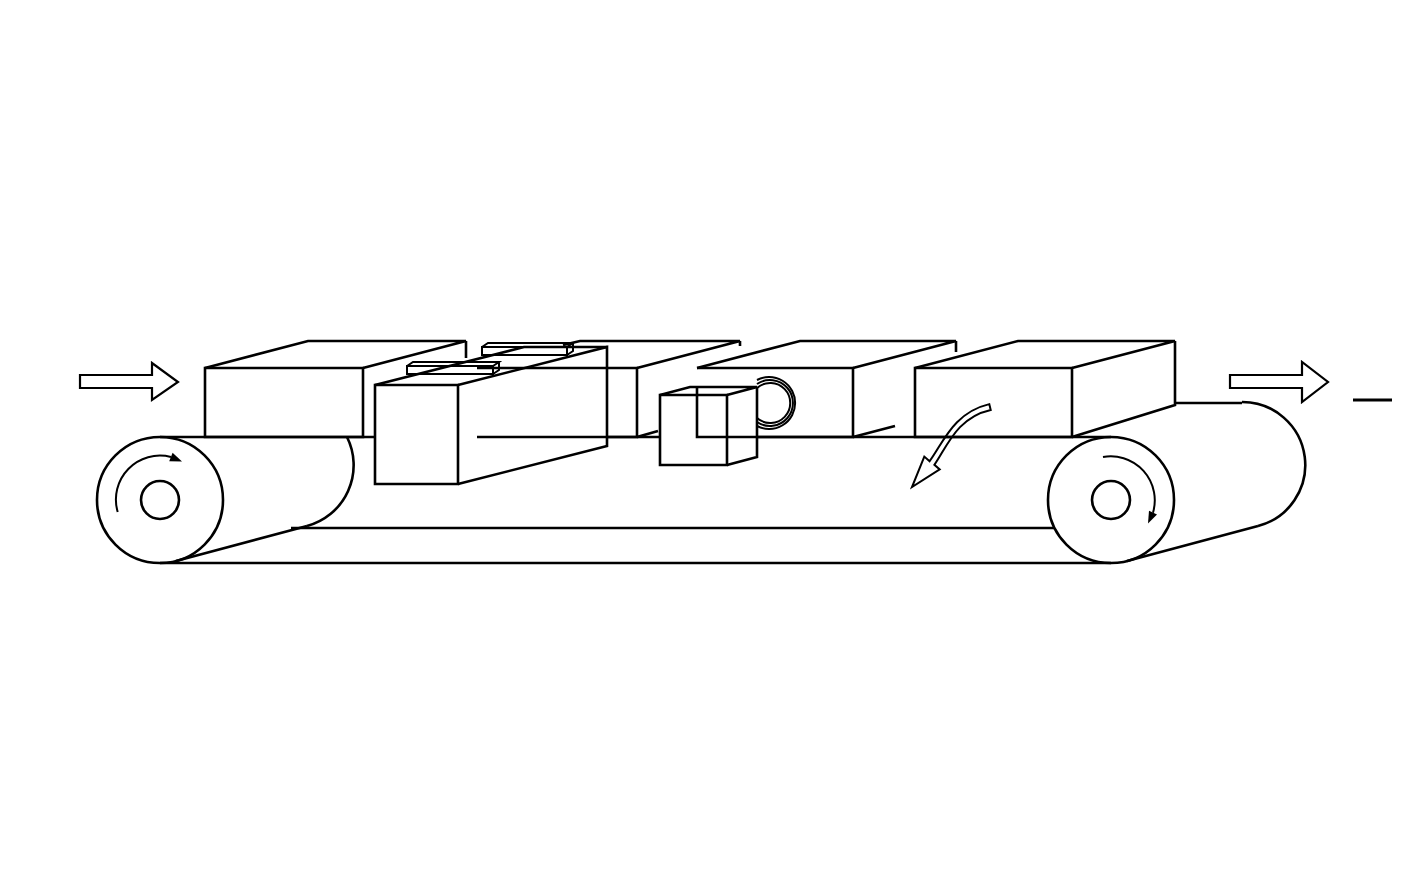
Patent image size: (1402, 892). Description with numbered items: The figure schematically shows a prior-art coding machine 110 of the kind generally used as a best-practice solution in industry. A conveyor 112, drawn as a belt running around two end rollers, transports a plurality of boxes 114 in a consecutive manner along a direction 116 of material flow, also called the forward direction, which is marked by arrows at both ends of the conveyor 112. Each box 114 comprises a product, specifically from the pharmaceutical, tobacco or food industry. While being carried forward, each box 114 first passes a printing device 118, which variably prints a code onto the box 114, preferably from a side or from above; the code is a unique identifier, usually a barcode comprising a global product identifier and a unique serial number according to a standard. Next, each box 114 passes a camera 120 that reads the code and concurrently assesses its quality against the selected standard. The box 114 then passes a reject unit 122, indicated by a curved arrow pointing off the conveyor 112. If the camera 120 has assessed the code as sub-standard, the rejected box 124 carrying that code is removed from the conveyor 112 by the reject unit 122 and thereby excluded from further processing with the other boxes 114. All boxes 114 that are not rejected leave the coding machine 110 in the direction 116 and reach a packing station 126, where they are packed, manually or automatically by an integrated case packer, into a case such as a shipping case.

The coding machine 110 is at (1198, 216).
The conveyor 112 is at (1118, 595).
The box 114 is at (362, 348).
The direction of material flow 116 is at (119, 380).
The printing device 118 is at (530, 447).
The camera 120 is at (740, 447).
The reject unit 122 is at (943, 452).
The rejected box 124 is at (1060, 348).
The packing station 126 is at (1372, 384).